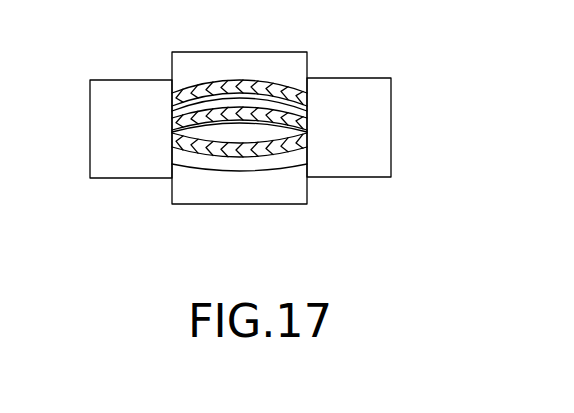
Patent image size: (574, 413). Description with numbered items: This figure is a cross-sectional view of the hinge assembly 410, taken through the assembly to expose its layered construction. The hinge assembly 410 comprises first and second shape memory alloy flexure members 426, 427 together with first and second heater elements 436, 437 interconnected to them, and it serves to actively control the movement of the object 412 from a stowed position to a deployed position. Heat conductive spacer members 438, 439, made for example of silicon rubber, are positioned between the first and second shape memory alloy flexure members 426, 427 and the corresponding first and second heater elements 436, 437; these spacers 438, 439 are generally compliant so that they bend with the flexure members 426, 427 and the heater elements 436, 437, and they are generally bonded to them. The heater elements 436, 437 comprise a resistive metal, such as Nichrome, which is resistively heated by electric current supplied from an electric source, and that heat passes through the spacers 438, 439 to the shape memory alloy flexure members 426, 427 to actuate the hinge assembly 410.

The hinge assembly 410 is at (161, 87).
The object 412 is at (152, 143).
The first shape memory alloy flexure member 426 is at (279, 85).
The second shape memory alloy flexure member 427 is at (308, 140).
The first heater element 436 is at (310, 115).
The second heater element 437 is at (303, 157).
The heat conductive spacer member 438 is at (306, 105).
The heat conductive spacer member 439 is at (308, 153).